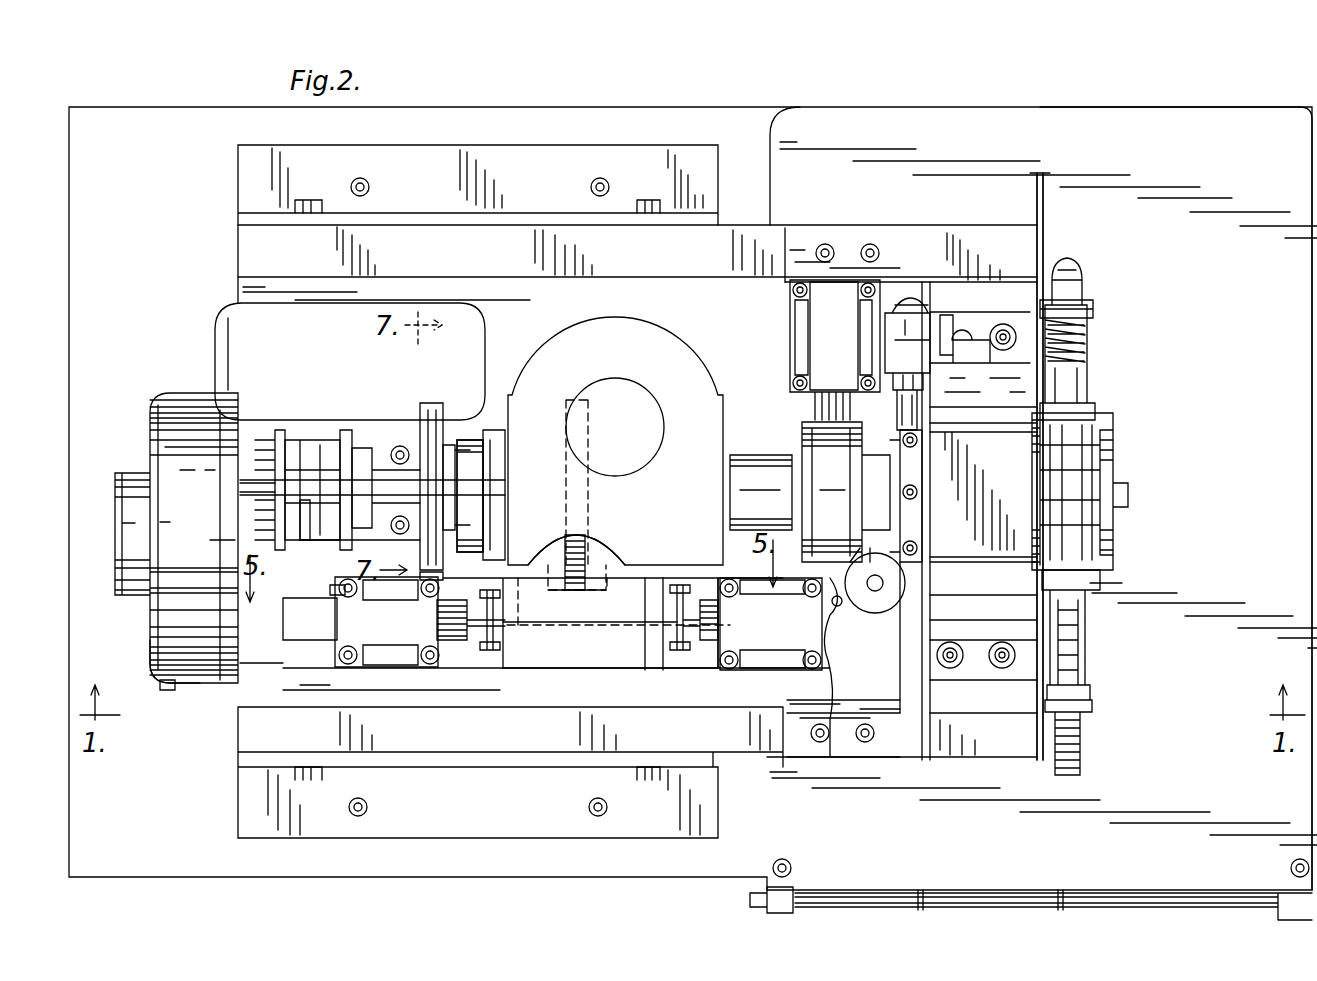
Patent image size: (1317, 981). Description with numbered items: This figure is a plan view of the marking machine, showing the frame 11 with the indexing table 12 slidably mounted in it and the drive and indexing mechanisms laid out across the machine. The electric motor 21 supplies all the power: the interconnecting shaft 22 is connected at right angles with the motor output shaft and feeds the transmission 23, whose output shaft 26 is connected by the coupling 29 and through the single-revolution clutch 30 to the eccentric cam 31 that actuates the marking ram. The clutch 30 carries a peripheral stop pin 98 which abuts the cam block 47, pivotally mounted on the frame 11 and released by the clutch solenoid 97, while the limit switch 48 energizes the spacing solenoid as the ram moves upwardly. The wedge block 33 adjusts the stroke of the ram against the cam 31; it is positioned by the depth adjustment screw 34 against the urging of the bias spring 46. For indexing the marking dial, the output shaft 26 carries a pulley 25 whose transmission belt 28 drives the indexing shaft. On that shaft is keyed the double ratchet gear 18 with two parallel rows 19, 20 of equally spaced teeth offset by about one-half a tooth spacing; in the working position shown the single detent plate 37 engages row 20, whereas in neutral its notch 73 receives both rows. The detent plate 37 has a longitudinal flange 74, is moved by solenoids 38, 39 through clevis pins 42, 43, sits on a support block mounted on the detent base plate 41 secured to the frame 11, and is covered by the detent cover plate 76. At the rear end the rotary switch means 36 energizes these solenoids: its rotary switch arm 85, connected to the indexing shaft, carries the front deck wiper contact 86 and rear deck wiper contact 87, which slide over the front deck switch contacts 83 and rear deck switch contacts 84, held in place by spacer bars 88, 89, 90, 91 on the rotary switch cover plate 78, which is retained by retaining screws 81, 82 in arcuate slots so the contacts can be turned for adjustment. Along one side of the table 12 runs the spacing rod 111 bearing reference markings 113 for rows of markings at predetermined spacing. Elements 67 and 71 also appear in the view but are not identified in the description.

The frame 11 is at (968, 248).
The indexing table 12 is at (1290, 203).
The post 67 is at (1043, 193).
The transmission 23 is at (660, 345).
The clutch solenoid 97 is at (795, 318).
The limit switch 48 is at (900, 342).
The bias spring 46 is at (1085, 340).
The wedge block 33 is at (1085, 415).
The eccentric cam 31 is at (1102, 452).
The depth adjustment screw 34 is at (1080, 650).
The rotary switch means 36 is at (290, 430).
The housing 71 is at (432, 440).
The spacer bar 88 is at (405, 450).
The retaining screw 81 is at (440, 440).
The rear deck wiper contact 87 is at (282, 430).
The spacer bar 91 is at (305, 438).
The front deck wiper contact 86 is at (347, 430).
The rotary switch arm 85 is at (378, 460).
The transmission belt 28 is at (483, 445).
The pulley 25 is at (505, 445).
The output shaft 26 is at (505, 492).
The interconnecting shaft 22 is at (645, 432).
The single-revolution clutch 30 is at (802, 430).
The coupling 29 is at (770, 444).
The row of gear teeth 20 is at (535, 560).
The row of gear teeth 19 is at (590, 555).
The double ratchet gear 18 is at (599, 560).
The flange 74 is at (662, 625).
The rear deck switch contacts 84 is at (262, 505).
The electric motor 21 is at (180, 683).
The spacer bar 90 is at (322, 520).
The front deck switch contacts 83 is at (360, 548).
The spacer bar 89 is at (310, 618).
The retaining screw 82 is at (378, 668).
The rotary switch cover plate 78 is at (428, 578).
The clevis pin 43 is at (485, 630).
The detent plate 37 is at (565, 595).
The notch 73 is at (580, 595).
The detent cover plate 76 is at (605, 655).
The clevis pin 42 is at (675, 640).
The detent base plate 41 is at (710, 662).
The solenoid 38 is at (770, 632).
The cam block 47 is at (860, 630).
The stop pin 98 is at (865, 600).
The solenoid 39 is at (380, 645).
The reference markings 113 is at (910, 895).
The spacing rod 111 is at (990, 895).